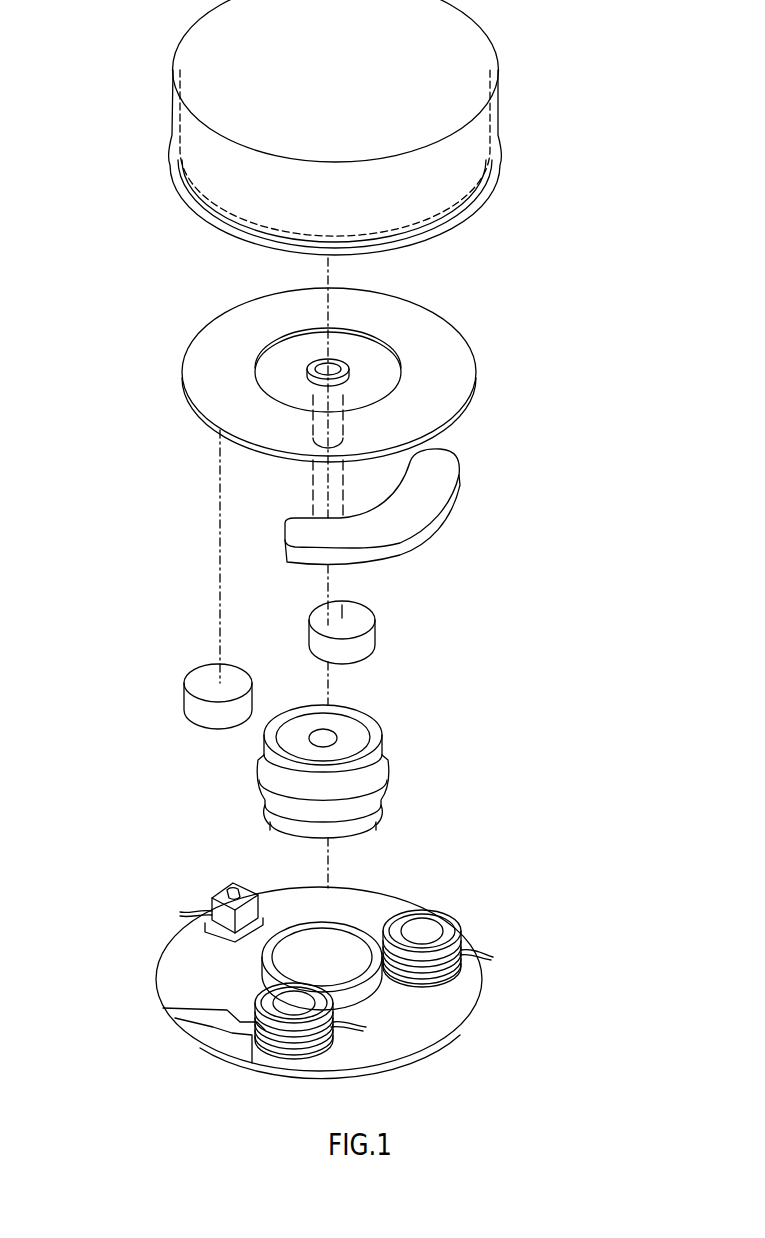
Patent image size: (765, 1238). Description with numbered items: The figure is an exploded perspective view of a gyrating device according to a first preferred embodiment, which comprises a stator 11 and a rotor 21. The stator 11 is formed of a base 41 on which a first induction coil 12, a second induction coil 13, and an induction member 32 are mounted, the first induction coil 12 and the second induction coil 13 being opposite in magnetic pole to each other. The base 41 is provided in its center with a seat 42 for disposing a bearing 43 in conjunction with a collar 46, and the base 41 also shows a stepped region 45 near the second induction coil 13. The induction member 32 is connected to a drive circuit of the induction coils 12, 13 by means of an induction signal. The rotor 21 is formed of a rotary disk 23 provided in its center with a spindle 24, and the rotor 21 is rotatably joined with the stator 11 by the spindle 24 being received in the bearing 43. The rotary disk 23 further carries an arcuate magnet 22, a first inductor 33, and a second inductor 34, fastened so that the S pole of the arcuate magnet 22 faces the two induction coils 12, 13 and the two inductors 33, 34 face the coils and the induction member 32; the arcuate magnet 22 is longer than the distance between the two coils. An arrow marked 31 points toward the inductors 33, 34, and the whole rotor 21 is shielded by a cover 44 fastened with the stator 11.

The stator 11 is at (540, 1002).
The first induction coil 12 is at (462, 928).
The second induction coil 13 is at (275, 1055).
The rotor 21 is at (495, 408).
The arcuate magnet 22 is at (448, 522).
The rotary disk 23 is at (452, 363).
The spindle 24 is at (323, 418).
The intermediate assembly 31 is at (158, 600).
The induction member 32 is at (228, 886).
The first inductor 33 is at (205, 685).
The second inductor 34 is at (357, 620).
The base 41 is at (185, 995).
The seat 42 is at (392, 902).
The bearing 43 is at (357, 740).
The cover 44 is at (462, 158).
The notch / step 45 is at (215, 1033).
The collar 46 is at (378, 795).